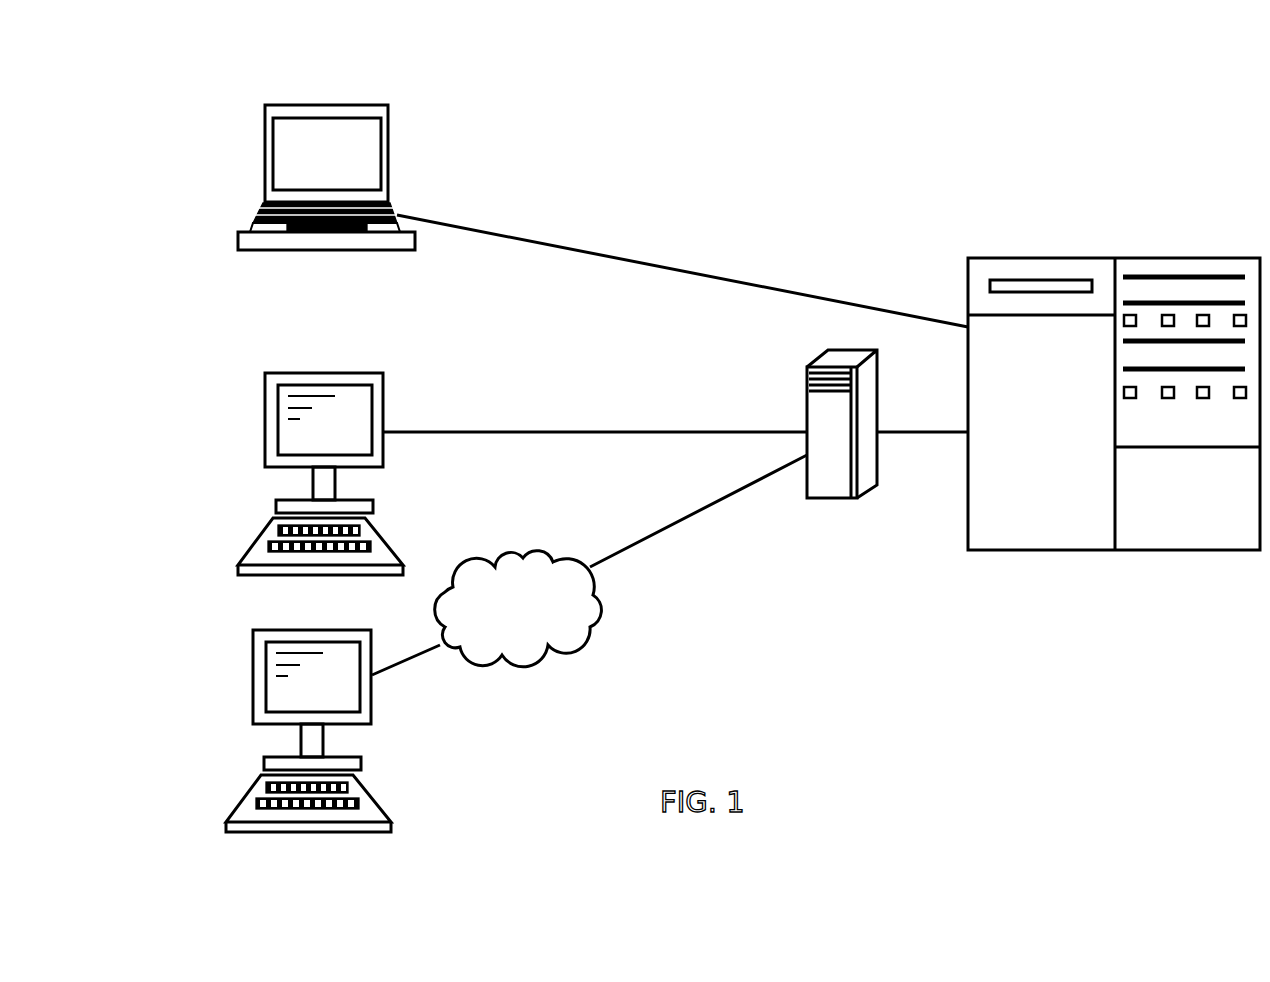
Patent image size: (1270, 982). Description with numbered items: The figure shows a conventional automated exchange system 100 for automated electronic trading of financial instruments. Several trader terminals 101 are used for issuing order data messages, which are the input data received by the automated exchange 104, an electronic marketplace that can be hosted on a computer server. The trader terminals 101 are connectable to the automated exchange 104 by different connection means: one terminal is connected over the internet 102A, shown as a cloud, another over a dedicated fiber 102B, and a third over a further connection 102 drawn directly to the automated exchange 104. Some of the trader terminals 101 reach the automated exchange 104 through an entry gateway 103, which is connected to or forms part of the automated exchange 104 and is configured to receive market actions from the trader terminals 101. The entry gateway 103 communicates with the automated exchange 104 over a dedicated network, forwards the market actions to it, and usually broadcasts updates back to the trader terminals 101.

The automated exchange system 100 is at (655, 125).
The trader terminals 101 is at (263, 188).
The network connection 102 is at (682, 265).
The internet 102A is at (589, 565).
The dedicated fiber 102B is at (675, 411).
The entry gateway 103 is at (848, 502).
The automated exchange 104 is at (1038, 250).